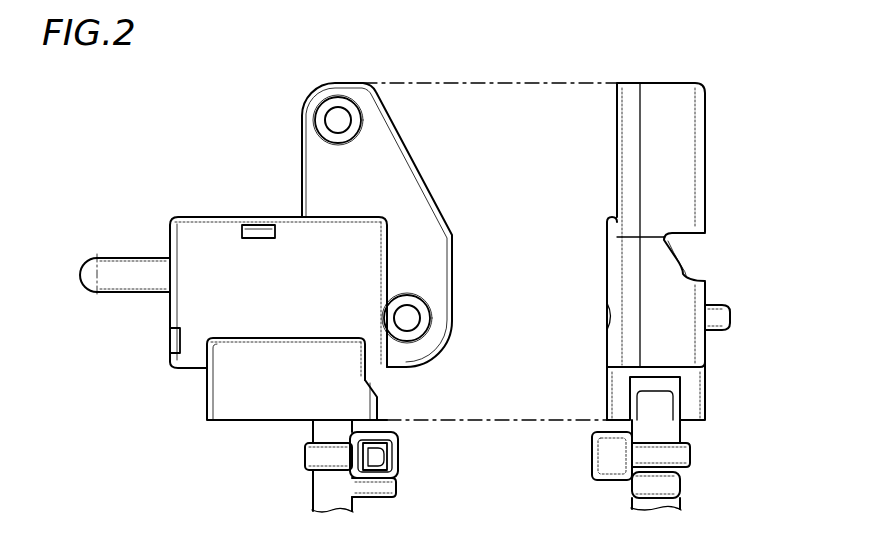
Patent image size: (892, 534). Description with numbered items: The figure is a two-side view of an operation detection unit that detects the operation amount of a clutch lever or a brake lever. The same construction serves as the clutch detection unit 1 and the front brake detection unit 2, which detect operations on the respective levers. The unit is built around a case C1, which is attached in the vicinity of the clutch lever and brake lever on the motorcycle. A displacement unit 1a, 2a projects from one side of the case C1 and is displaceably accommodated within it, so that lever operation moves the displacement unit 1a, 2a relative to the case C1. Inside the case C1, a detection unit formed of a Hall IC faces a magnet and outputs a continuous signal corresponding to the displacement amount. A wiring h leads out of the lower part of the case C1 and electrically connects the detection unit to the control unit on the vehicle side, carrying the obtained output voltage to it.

The clutch detection unit 1 is at (438, 299).
The front brake detection unit 2 is at (438, 299).
The displacement unit 1a is at (125, 242).
The displacement unit 2a is at (118, 263).
The case C1 is at (210, 235).
The wiring h is at (314, 492).